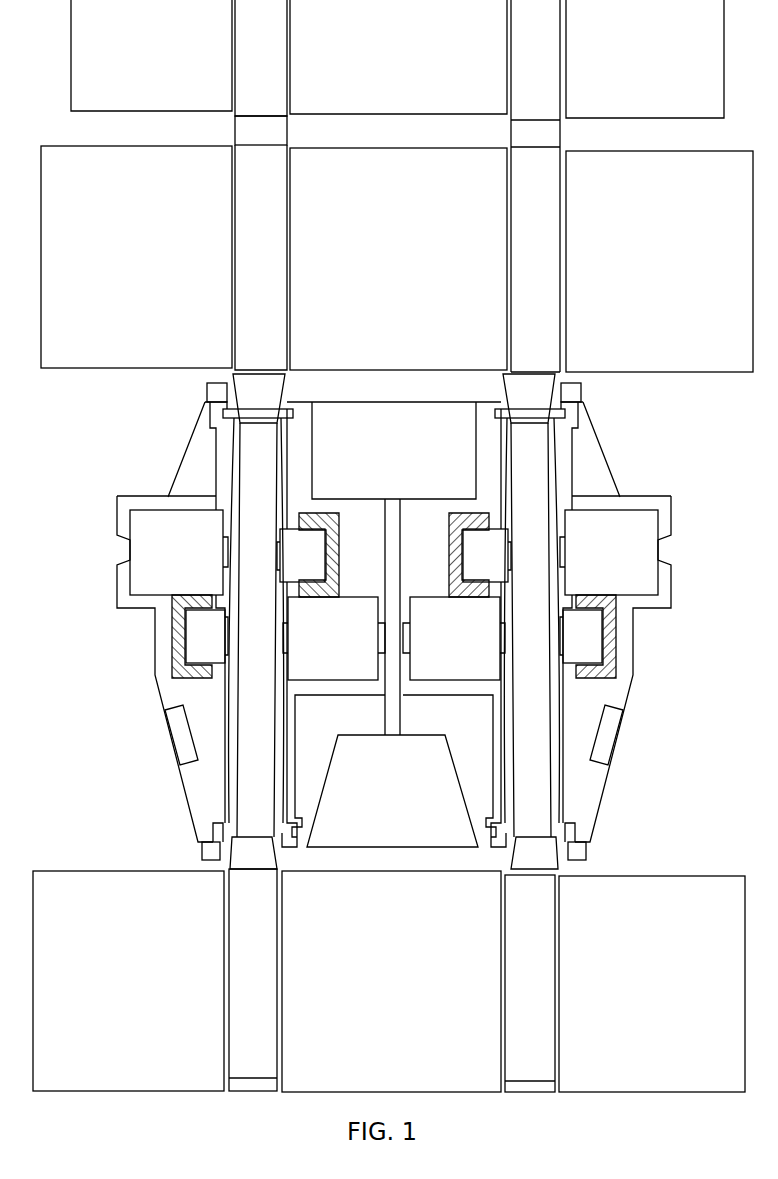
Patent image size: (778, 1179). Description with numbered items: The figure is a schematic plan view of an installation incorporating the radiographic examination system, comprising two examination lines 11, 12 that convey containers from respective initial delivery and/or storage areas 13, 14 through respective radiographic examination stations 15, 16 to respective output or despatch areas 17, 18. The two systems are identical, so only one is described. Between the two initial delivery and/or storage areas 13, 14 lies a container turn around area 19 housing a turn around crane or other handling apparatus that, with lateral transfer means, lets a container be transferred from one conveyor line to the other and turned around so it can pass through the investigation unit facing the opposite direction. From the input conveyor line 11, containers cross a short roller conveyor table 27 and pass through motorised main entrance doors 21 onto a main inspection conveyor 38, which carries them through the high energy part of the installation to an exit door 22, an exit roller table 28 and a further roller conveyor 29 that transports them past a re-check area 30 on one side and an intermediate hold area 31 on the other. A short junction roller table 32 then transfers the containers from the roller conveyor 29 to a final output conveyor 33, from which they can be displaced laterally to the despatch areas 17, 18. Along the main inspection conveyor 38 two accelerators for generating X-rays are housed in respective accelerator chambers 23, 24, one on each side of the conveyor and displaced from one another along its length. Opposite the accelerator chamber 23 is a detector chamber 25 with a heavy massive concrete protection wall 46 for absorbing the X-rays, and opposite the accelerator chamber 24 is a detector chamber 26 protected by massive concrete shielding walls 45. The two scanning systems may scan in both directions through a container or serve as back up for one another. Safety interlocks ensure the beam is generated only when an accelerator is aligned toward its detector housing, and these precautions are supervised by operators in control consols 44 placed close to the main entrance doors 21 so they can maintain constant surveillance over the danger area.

The examination line 11 is at (240, 1040).
The examination line 12 is at (547, 1044).
The initial delivery and/or storage area 13 is at (78, 896).
The initial delivery and/or storage area 14 is at (632, 905).
The radiographic examination station 15 is at (136, 738).
The radiographic examination station 16 is at (642, 697).
The output or despatch area 17 is at (129, 104).
The output or despatch area 18 is at (644, 108).
The container turn around area 19 is at (386, 893).
The motorised main entrance doors 21 is at (263, 830).
The exit door 22 is at (264, 414).
The accelerator chamber 23 is at (316, 672).
The accelerator chamber 24 is at (148, 522).
The detector chamber 25 is at (195, 643).
The detector chamber 26 is at (290, 545).
The short roller conveyor table 27 is at (259, 862).
The exit roller table 28 is at (233, 378).
The further roller conveyor 29 is at (272, 252).
The re-check area 30 is at (132, 360).
The intermediate hold area 31 is at (419, 362).
The short junction roller table 32 is at (247, 137).
The final output conveyor 33 is at (277, 72).
The main inspection conveyor 38 is at (272, 760).
The control consols 44 is at (208, 850).
The massive concrete shielding walls 45 is at (333, 551).
The heavy massive concrete protection wall 46 is at (178, 628).